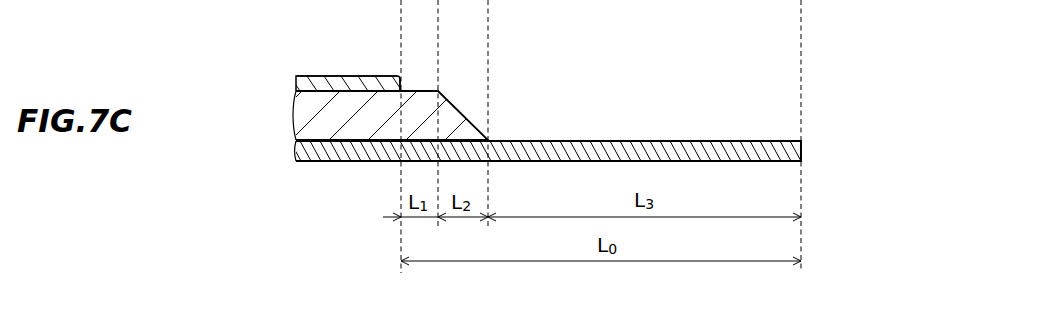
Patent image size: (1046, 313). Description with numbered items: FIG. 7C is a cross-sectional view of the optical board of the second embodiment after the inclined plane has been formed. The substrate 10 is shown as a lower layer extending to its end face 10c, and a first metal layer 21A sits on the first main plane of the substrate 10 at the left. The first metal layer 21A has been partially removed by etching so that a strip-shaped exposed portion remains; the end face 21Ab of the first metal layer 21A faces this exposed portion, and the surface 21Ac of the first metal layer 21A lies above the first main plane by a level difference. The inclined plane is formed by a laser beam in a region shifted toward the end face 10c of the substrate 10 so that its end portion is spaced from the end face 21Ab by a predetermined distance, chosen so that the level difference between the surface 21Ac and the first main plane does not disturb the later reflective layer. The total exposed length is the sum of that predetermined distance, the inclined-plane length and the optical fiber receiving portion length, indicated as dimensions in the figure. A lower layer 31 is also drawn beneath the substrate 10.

The substrate 10 is at (307, 113).
The end face of the substrate 10c is at (803, 150).
The first metal layer 21A is at (294, 83).
The end face of the first metal layer 21Ab is at (400, 78).
The surface of the first metal layer 21Ac is at (322, 76).
The base layer 31 is at (294, 153).